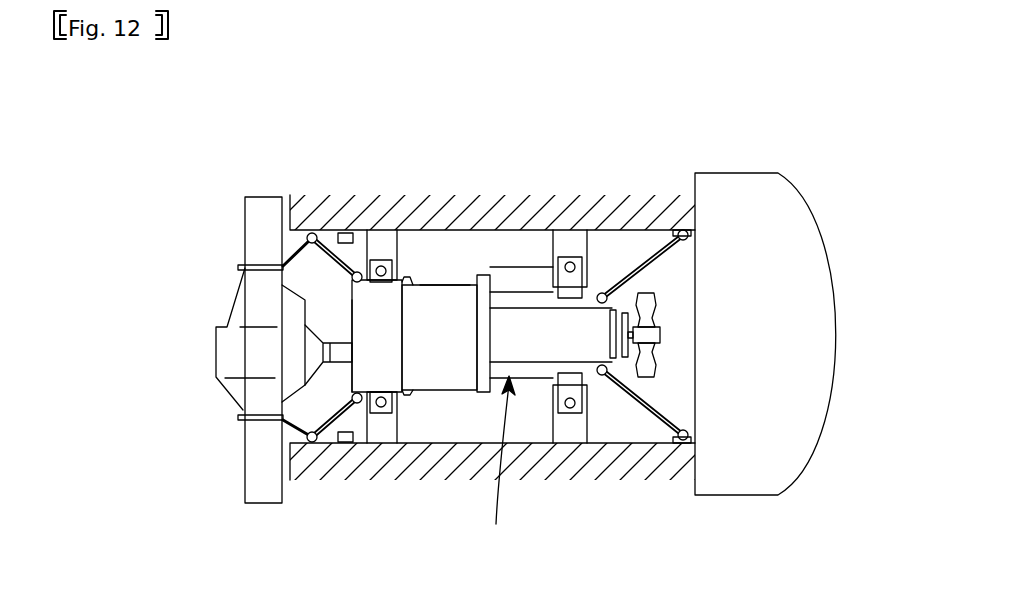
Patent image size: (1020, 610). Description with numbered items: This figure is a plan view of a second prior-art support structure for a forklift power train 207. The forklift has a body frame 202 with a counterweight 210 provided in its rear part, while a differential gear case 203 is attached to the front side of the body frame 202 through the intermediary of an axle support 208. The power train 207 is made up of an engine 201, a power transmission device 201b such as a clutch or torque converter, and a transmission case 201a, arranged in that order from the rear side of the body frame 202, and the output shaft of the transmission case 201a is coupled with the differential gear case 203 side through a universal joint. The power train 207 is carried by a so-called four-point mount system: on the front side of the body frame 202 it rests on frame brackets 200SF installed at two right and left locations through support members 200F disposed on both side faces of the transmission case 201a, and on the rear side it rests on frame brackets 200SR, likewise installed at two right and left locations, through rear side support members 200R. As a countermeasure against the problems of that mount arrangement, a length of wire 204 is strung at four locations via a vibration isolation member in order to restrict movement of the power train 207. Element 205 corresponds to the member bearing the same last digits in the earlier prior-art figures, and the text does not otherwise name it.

The engine 201 is at (521, 327).
The transmission case 201a is at (365, 315).
The power transmission device 201b is at (449, 296).
The support member 200F is at (393, 250).
The rear side support member 200R is at (568, 262).
The frame bracket 200SF is at (400, 238).
The frame bracket 200SR is at (588, 243).
The body frame 202 is at (683, 207).
The differential gear case 203 is at (247, 355).
The wire 204 is at (334, 232).
The fan 205 is at (660, 306).
The power train 207 is at (517, 556).
The axle support 208 is at (283, 254).
The counterweight 210 is at (782, 250).